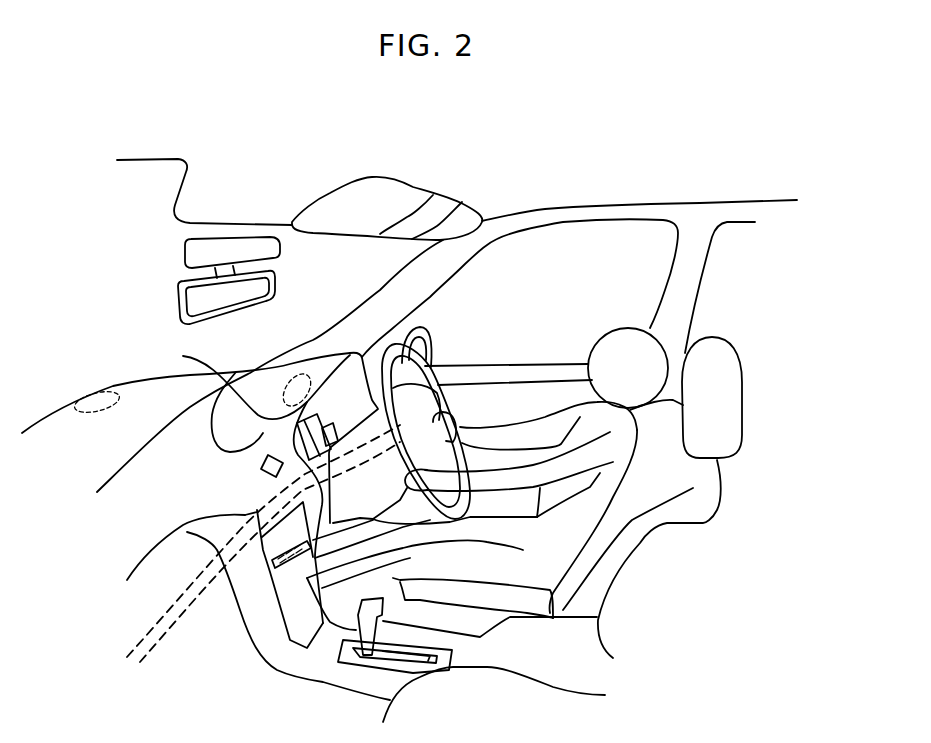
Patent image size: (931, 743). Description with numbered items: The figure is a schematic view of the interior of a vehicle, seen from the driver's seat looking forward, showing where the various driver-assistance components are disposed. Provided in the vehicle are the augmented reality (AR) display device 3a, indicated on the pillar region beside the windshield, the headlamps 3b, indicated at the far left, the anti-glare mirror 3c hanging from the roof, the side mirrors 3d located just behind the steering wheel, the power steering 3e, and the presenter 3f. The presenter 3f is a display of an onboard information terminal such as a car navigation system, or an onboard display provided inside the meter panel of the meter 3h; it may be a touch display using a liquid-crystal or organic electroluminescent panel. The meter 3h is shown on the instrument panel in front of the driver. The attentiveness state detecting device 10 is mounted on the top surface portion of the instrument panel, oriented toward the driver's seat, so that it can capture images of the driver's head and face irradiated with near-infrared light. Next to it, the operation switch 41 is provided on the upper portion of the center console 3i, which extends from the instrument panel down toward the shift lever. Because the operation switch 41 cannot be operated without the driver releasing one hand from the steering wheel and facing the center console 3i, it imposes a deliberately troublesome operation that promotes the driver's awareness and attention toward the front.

The augmented reality (AR) display device 3a is at (281, 380).
The headlamps 3b is at (100, 392).
The anti-glare mirror 3c is at (173, 291).
The side mirrors 3d is at (437, 337).
The power steering 3e is at (262, 530).
The presenter 3f is at (266, 568).
The meter 3h is at (250, 380).
The center console 3i is at (323, 657).
The attentiveness state detecting device 10 is at (296, 447).
The operation switch 41 is at (261, 469).